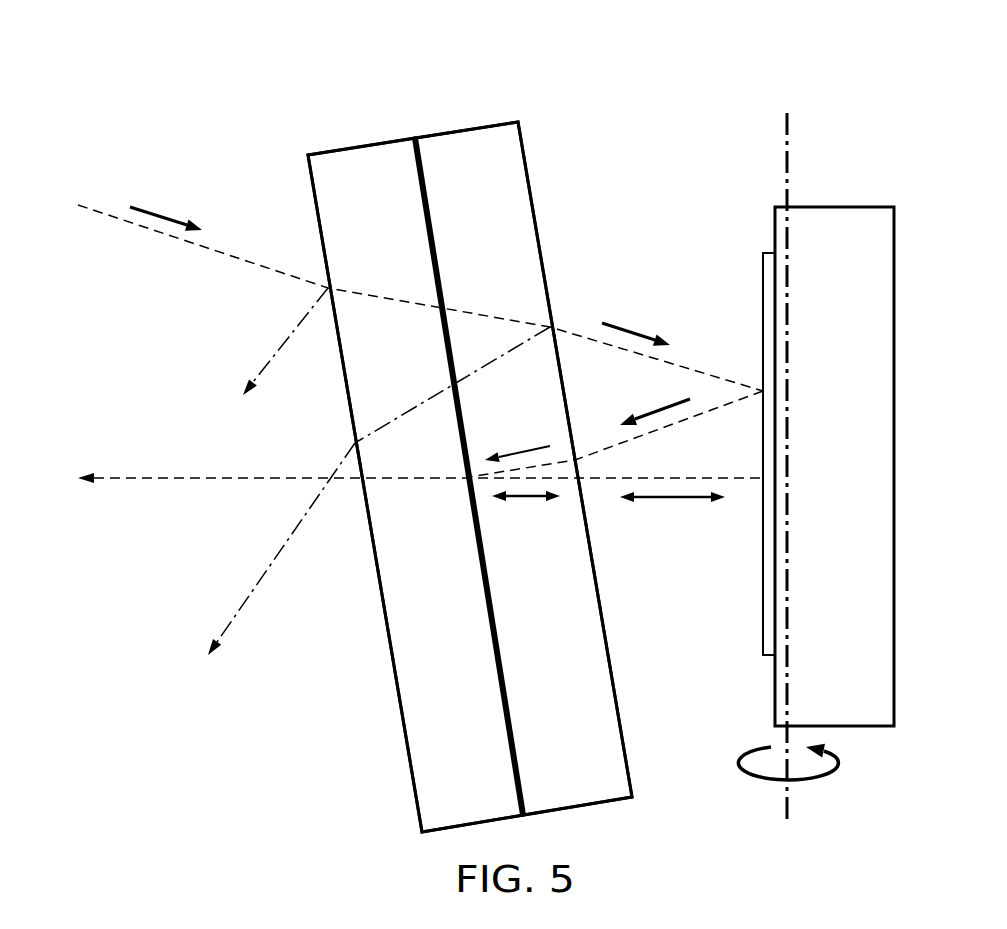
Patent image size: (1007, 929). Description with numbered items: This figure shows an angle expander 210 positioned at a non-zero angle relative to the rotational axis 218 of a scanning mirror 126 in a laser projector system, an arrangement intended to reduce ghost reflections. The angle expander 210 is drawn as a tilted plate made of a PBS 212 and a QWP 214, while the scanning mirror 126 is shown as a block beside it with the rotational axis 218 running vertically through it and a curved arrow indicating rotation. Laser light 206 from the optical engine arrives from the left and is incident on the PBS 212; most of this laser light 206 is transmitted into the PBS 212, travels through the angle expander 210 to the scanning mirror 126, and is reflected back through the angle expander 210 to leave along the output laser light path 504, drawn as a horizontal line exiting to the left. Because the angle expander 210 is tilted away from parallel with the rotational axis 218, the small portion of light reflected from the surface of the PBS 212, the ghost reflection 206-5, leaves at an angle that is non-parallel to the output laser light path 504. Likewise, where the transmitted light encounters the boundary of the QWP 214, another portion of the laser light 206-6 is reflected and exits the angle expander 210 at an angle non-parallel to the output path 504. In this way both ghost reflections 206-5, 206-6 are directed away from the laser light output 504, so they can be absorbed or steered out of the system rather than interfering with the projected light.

The angle expander 210 is at (470, 420).
The PBS 212 is at (353, 160).
The QWP 214 is at (472, 140).
The laser light 206 is at (138, 227).
The ghost reflection 206-5 is at (288, 343).
The reflected portion of laser light 206-6 is at (408, 412).
The output laser light path 504 is at (155, 476).
The scanning mirror 126 is at (833, 206).
The rotational axis 218 is at (788, 797).